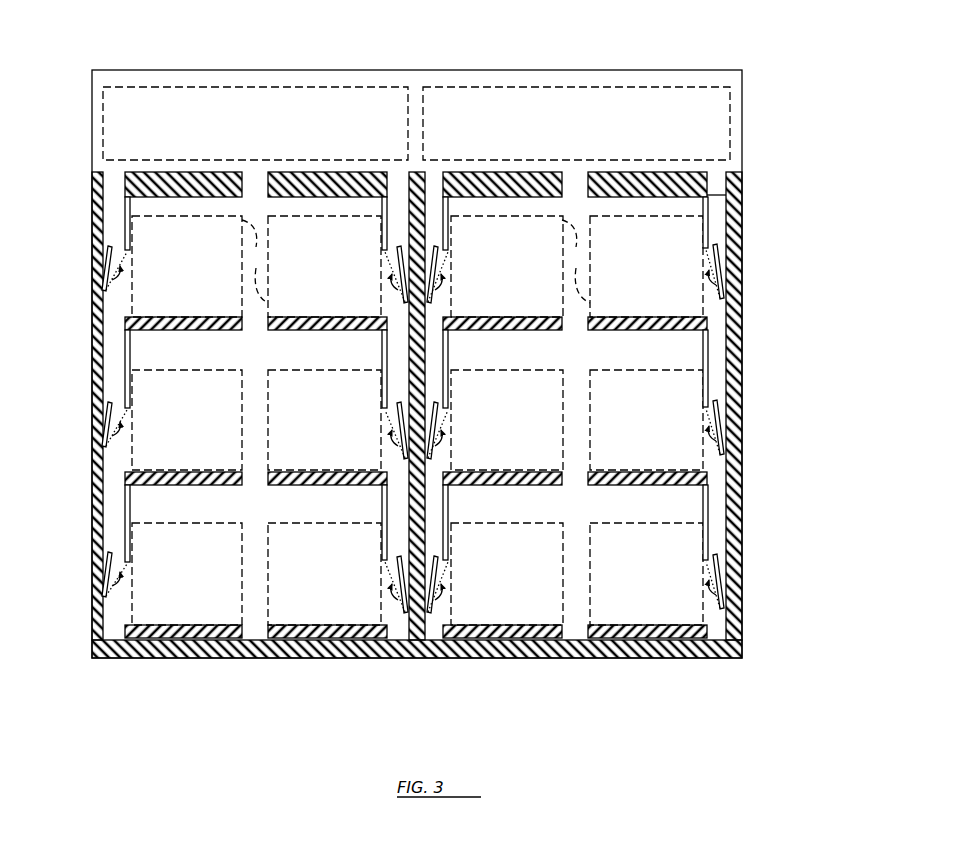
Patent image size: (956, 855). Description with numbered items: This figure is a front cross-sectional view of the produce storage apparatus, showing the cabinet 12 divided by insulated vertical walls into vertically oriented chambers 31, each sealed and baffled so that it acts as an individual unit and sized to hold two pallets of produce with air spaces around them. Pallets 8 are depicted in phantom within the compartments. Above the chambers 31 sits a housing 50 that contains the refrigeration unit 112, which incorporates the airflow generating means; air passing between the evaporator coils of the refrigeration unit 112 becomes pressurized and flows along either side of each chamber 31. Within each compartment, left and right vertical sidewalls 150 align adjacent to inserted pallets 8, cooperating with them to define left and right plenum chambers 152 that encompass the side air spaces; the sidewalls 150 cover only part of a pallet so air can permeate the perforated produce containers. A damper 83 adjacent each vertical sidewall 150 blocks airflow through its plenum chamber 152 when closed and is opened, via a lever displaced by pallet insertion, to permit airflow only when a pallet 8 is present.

The housing 50 is at (240, 68).
The refrigeration unit 112 is at (350, 85).
The cabinet 12 is at (224, 690).
The plenum chamber 152 is at (113, 327).
The vertically oriented chamber 31 is at (283, 572).
The pallet 8 is at (416, 261).
The vertical sidewall 150 is at (127, 210).
The damper 83 is at (102, 258).